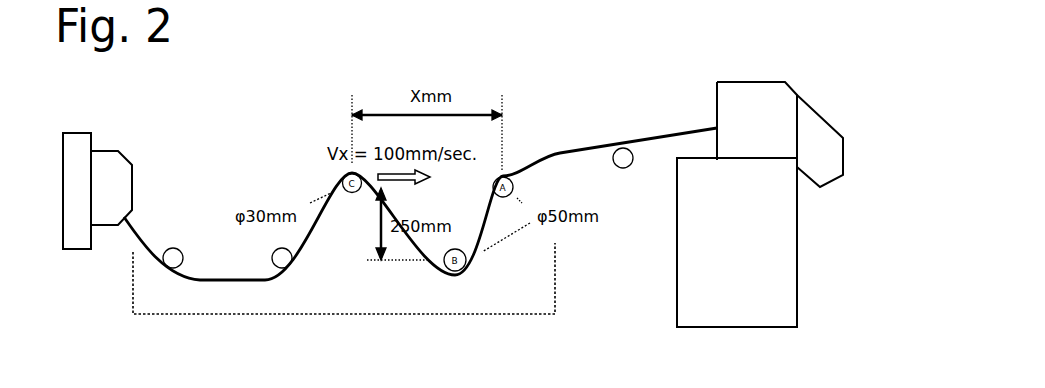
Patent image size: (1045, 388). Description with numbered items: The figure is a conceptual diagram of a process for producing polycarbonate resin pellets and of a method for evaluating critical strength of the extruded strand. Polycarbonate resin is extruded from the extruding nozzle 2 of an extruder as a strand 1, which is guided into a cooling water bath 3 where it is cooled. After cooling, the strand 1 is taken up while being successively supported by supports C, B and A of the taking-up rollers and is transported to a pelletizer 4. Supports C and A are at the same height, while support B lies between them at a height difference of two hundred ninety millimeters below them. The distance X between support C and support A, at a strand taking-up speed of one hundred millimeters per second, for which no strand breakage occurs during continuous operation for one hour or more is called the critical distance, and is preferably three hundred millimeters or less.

The strand 1 is at (590, 147).
The extruding nozzle 2 is at (125, 152).
The cooling water bath 3 is at (305, 315).
The pelletizer 4 is at (760, 204).